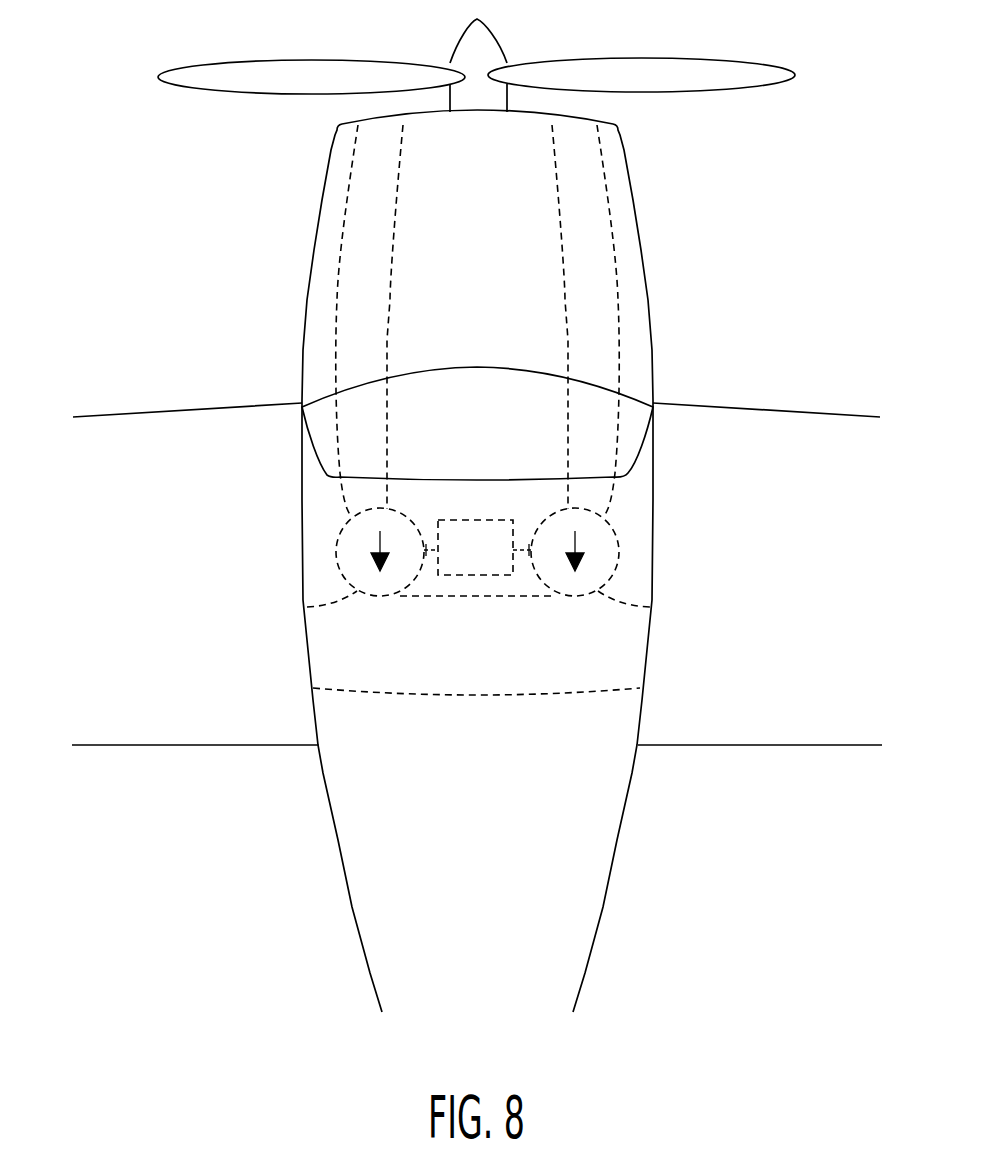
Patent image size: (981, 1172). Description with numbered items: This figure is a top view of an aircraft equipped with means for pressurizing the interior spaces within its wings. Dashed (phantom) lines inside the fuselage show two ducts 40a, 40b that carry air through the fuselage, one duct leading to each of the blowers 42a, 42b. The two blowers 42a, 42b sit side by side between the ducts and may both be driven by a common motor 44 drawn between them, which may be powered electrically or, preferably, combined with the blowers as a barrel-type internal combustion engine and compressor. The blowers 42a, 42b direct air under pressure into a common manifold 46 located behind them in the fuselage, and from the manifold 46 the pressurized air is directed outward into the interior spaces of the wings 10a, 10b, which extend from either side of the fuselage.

The wing 10a is at (190, 647).
The wing 10b is at (820, 647).
The duct 40a is at (377, 192).
The duct 40b is at (577, 268).
The blower 42a is at (337, 552).
The blower 42b is at (617, 557).
The common motor 44 is at (487, 558).
The common manifold 46 is at (488, 665).